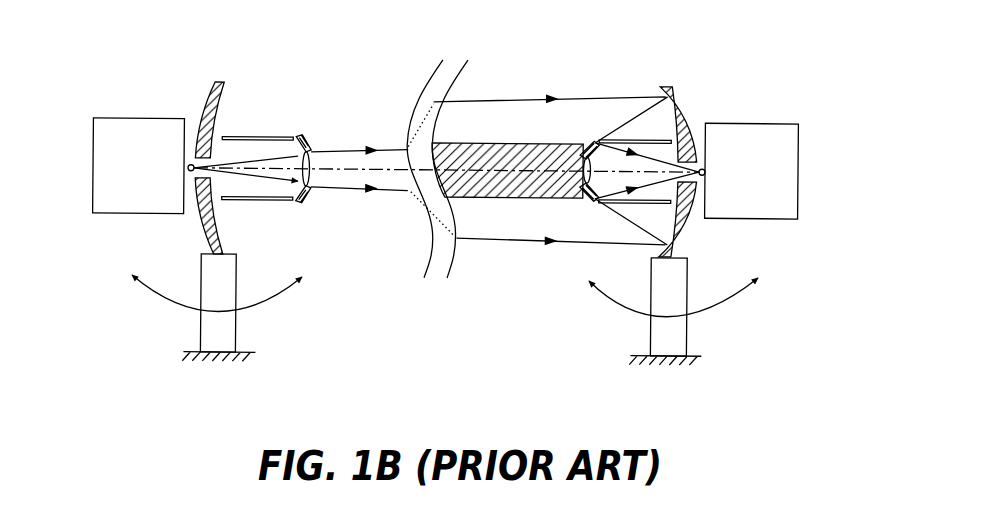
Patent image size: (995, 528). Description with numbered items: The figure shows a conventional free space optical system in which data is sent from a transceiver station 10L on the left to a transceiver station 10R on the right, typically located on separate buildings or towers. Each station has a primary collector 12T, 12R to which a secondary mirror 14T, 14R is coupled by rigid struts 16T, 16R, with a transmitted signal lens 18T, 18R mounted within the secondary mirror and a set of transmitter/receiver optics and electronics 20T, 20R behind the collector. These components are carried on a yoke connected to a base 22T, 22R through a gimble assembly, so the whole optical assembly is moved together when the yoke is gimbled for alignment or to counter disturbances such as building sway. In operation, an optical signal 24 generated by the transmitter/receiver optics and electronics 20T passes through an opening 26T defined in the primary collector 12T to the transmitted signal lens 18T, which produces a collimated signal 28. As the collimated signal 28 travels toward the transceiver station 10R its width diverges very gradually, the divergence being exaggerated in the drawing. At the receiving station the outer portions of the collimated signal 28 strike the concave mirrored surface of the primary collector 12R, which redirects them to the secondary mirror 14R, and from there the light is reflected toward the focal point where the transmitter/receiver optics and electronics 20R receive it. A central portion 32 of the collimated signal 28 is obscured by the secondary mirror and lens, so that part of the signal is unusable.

The transceiver station 10L is at (287, 317).
The transceiver station 10R is at (613, 325).
The primary collector 12T is at (221, 84).
The primary collector 12R is at (680, 102).
The secondary mirror 14T is at (309, 145).
The secondary mirror 14R is at (580, 140).
The rigid struts 16T is at (308, 141).
The rigid struts 16R is at (627, 140).
The transmitted signal lens 18T is at (313, 183).
The transmitted signal lens 18R is at (550, 197).
The transmitter/receiver optics and electronics 20T is at (93, 168).
The transmitter/receiver optics and electronics 20R is at (798, 170).
The base 22T is at (217, 328).
The base 22R is at (673, 337).
The optical signal 24 is at (250, 177).
The opening 26T is at (204, 161).
The collimated signal 28 is at (360, 185).
The central portion 32 is at (490, 143).